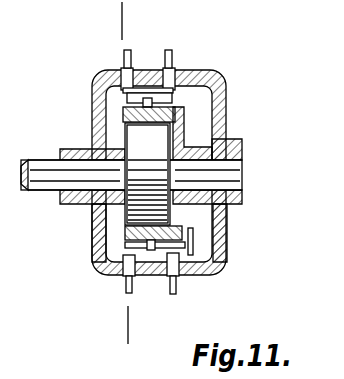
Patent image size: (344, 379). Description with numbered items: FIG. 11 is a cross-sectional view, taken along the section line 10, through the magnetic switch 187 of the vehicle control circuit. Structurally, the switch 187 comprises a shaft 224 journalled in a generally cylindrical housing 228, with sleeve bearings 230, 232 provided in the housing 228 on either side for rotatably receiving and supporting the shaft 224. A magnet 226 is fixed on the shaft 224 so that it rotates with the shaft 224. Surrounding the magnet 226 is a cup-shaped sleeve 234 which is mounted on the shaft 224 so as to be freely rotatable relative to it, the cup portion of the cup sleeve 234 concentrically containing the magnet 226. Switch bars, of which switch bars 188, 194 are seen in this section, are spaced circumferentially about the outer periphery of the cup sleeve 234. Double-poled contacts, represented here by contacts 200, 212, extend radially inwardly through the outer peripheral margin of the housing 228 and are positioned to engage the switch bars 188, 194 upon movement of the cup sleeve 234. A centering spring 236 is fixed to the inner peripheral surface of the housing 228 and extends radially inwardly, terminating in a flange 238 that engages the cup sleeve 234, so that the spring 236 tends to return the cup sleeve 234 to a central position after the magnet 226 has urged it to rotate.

The section line 10 is at (121, 18).
The magnetic switch 187 is at (222, 73).
The switch bar 188 is at (147, 98).
The switch bar 194 is at (126, 258).
The double-poled contact 200 is at (168, 50).
The double-poled contact 212 is at (178, 303).
The shaft 224 is at (62, 192).
The magnet 226 is at (129, 137).
The housing 228 is at (219, 102).
The sleeve bearing 230 is at (241, 159).
The sleeve bearing 232 is at (60, 154).
The cup-shaped sleeve 234 is at (205, 143).
The centering spring 236 is at (190, 251).
The flange 238 is at (192, 233).